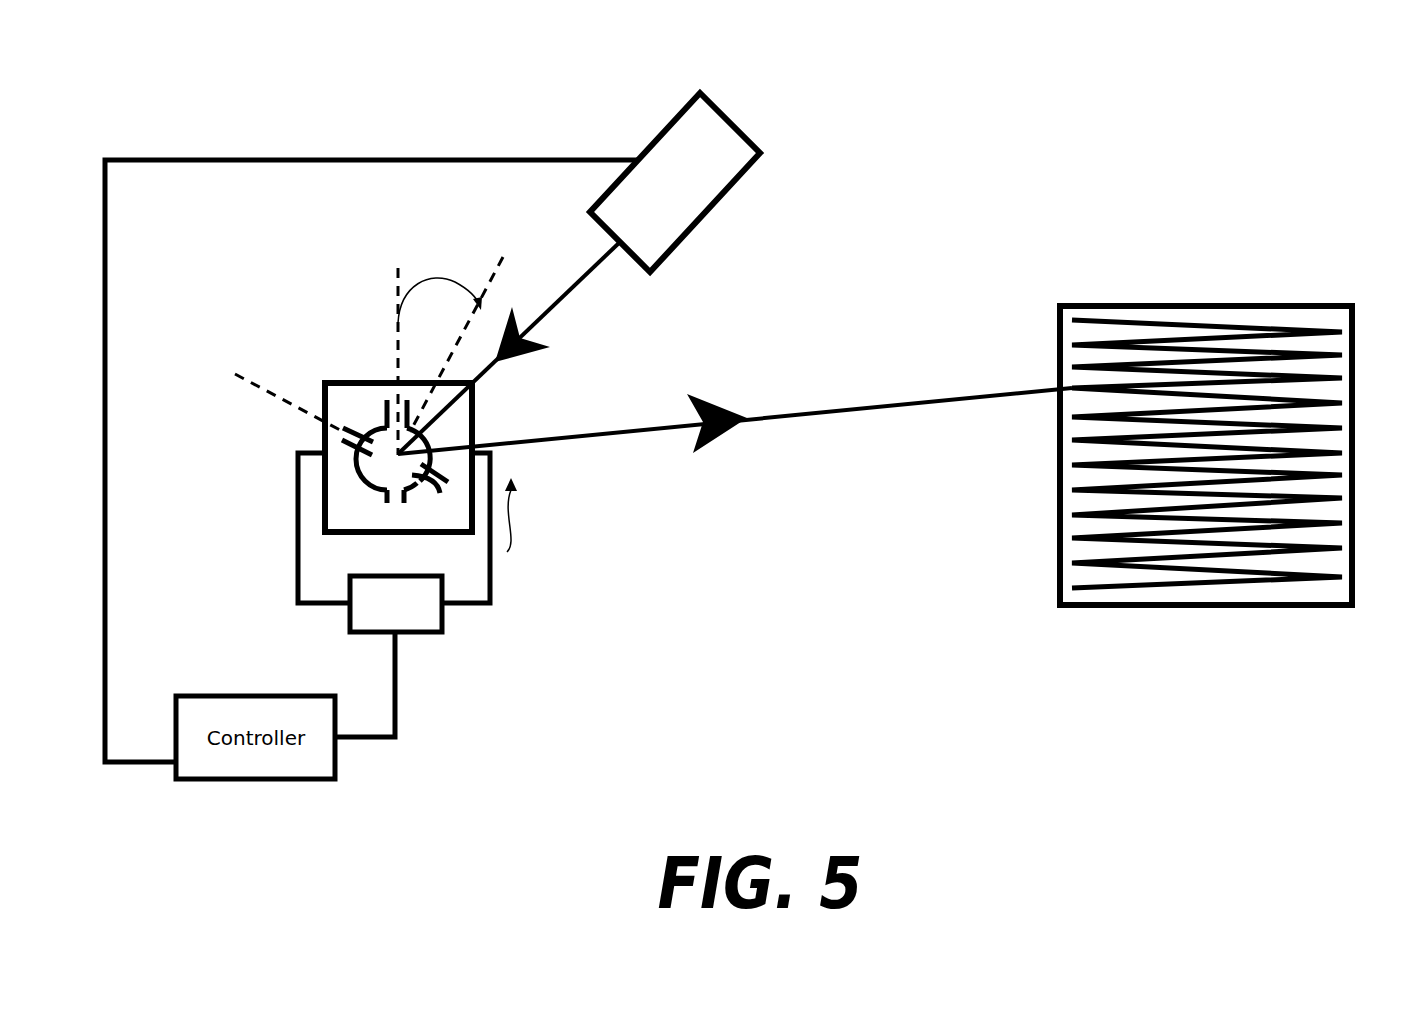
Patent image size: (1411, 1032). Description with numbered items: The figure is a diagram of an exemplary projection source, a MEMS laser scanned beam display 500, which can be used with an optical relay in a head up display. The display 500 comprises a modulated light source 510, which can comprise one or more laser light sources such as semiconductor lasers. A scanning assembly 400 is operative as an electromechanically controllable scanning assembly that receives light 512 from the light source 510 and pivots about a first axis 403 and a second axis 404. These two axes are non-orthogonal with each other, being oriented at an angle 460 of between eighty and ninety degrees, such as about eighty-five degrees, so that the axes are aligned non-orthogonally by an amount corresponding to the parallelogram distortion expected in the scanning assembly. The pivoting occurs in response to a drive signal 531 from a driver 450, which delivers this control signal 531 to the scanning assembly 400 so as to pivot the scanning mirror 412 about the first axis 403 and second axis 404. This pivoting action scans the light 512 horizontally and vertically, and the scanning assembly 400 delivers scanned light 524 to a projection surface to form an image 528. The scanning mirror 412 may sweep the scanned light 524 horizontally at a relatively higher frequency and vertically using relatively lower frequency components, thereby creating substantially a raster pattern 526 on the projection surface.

The MEMS laser scanned beam display 500 is at (1030, 236).
The modulated light source 510 is at (658, 227).
The light 512 is at (567, 282).
The scanned light 524 is at (625, 438).
The raster pattern 526 is at (1220, 323).
The image 528 is at (1356, 330).
The scanning assembly 400 is at (340, 380).
The first axis 403 is at (245, 380).
The second axis 404 is at (396, 290).
The angle 460 is at (451, 284).
The scanning mirror 412 is at (434, 494).
The driver 450 is at (445, 622).
The drive signal 531 is at (515, 528).